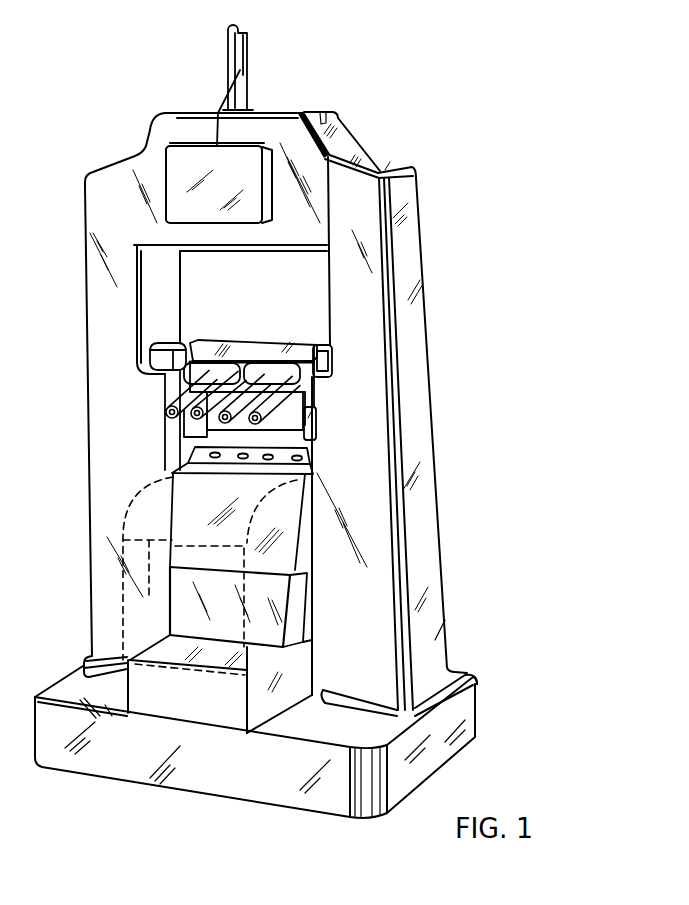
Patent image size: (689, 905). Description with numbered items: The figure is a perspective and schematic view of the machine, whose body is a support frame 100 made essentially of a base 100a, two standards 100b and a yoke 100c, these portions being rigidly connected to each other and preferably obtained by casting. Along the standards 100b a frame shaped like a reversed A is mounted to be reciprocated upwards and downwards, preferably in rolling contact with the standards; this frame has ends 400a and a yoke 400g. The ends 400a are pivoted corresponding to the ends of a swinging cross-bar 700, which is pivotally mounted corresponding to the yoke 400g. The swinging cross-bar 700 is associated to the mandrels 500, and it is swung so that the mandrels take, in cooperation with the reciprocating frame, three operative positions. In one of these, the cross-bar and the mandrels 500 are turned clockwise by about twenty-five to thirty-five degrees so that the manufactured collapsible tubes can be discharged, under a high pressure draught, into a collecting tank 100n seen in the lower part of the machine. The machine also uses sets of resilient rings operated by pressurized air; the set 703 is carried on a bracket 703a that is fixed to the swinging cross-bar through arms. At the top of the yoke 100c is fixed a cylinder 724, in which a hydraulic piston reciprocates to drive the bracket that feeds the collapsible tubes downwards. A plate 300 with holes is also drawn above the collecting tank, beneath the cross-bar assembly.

The support frame 100 is at (87, 335).
The base 100a is at (210, 770).
The standards 100b is at (103, 487).
The yoke 100c is at (323, 182).
The collecting tank 100n is at (217, 555).
The mounting plate with holes 300 is at (197, 451).
The ends of the frame 400a is at (162, 343).
The yoke 400g is at (292, 412).
The mandrels 500 is at (168, 394).
The swinging cross-bar 700 is at (288, 348).
The set of resilient rings 703 is at (170, 408).
The bracket 703a is at (246, 358).
The cylinder 724 is at (245, 52).